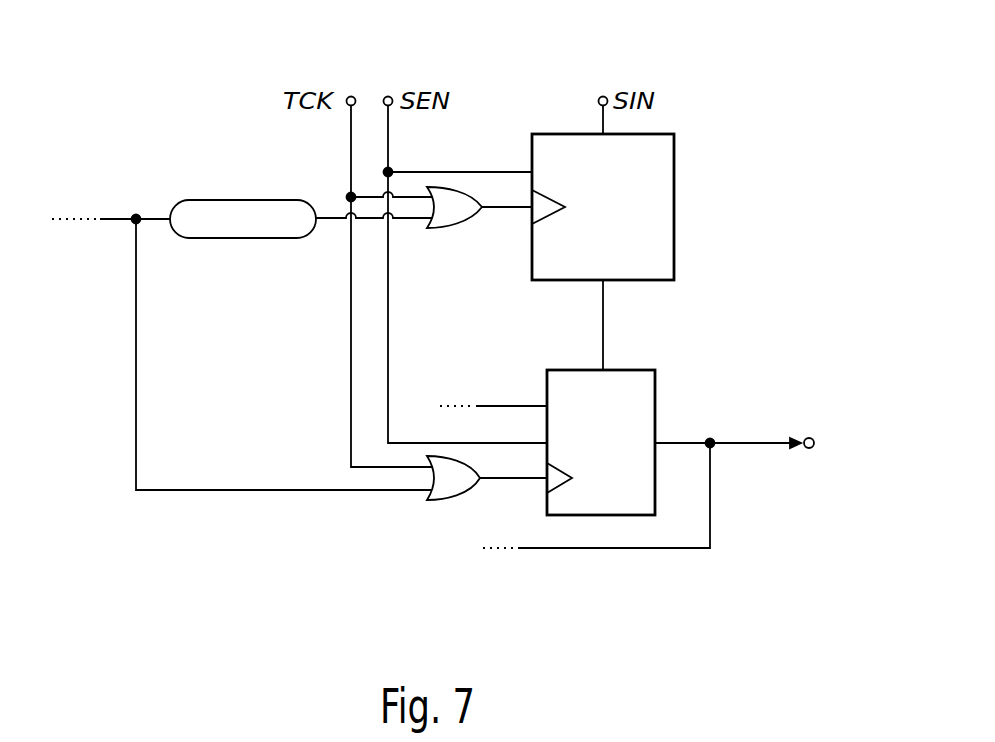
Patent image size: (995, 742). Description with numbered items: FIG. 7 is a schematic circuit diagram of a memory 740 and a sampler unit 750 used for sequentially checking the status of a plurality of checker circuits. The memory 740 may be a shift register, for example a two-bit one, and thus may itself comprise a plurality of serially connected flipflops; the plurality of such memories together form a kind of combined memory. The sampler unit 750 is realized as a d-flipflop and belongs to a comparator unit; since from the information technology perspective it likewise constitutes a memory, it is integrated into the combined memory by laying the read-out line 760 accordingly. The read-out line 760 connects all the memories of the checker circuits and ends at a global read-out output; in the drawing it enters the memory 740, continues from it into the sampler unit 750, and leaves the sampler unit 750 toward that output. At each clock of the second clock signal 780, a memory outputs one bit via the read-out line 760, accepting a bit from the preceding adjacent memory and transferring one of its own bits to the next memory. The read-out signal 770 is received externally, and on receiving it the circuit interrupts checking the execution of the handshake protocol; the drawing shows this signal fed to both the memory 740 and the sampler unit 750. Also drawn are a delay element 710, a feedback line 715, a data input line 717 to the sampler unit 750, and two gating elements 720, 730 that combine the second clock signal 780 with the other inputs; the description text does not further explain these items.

The minimum delay element 710 is at (210, 200).
The clock feedback line 715 is at (200, 492).
The data input line 717 is at (478, 406).
The OR gate 720 is at (445, 232).
The OR gate 730 is at (437, 500).
The memory 740 is at (562, 134).
The sampler unit 750 is at (656, 388).
The read-out line 760 is at (597, 112).
The read-out signal 770 is at (388, 363).
The second clock signal 780 is at (351, 363).